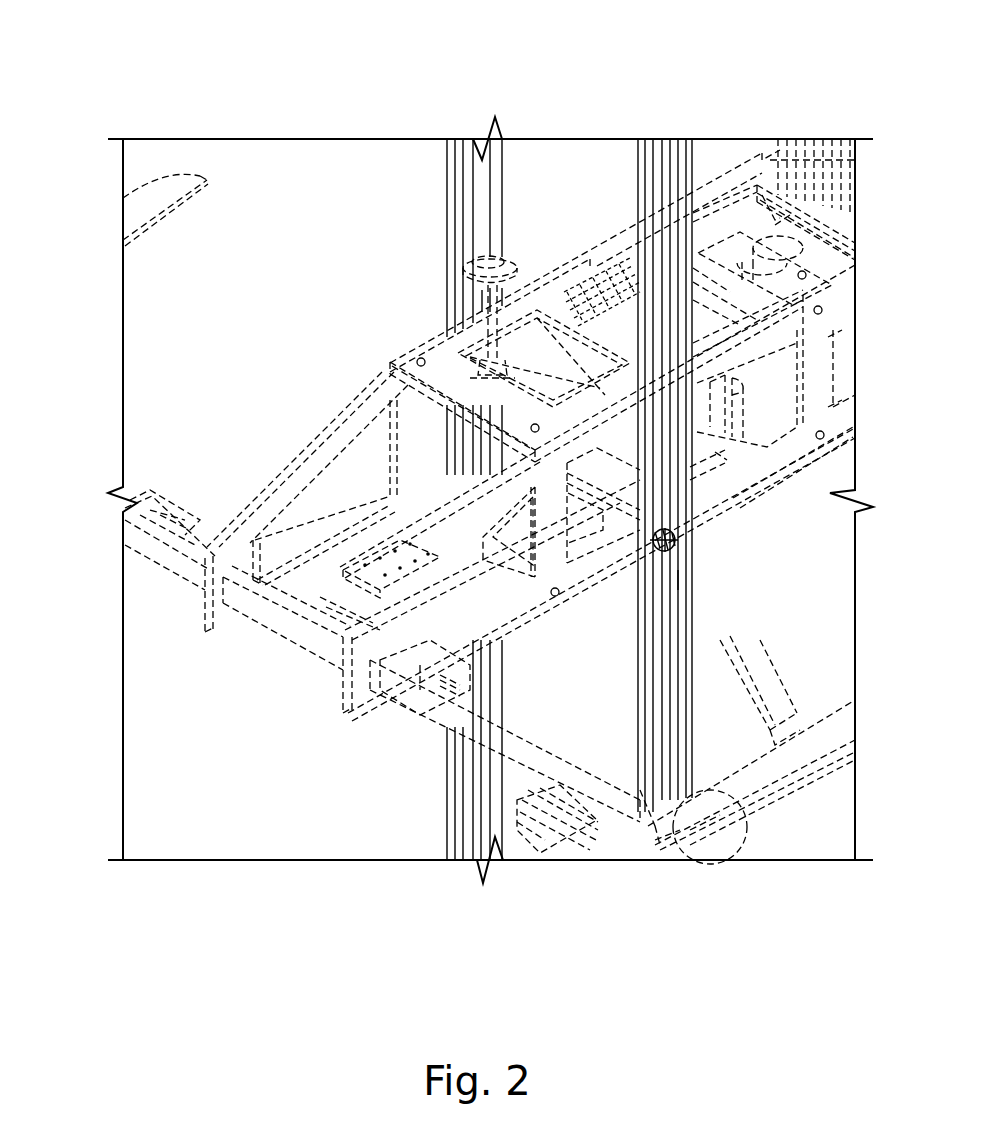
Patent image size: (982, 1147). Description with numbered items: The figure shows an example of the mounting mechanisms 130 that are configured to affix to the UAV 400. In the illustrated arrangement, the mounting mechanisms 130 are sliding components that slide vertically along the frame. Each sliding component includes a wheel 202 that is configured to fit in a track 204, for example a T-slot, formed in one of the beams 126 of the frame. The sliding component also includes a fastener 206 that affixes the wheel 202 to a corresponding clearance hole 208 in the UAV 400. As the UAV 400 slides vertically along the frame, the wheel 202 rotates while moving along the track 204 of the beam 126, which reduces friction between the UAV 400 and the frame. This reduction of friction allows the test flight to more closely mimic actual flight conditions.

The mounting mechanisms 130 is at (128, 42).
The beams 126 is at (642, 188).
The UAV 400 is at (402, 322).
The clearance hole 208 is at (508, 452).
The fastener 206 is at (650, 538).
The wheel 202 is at (672, 540).
The track 204 is at (680, 578).